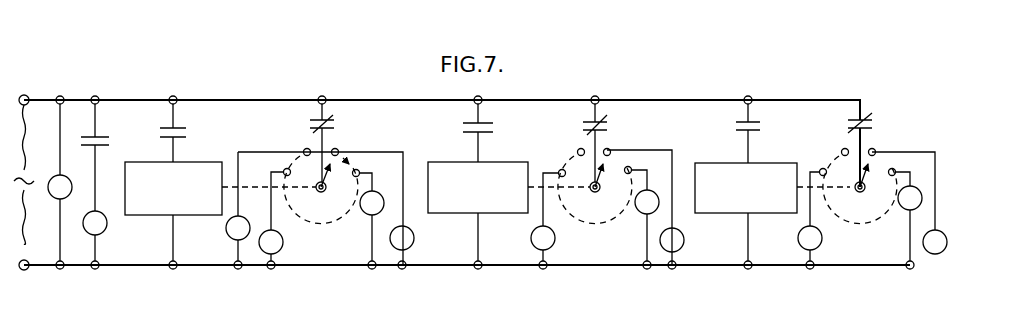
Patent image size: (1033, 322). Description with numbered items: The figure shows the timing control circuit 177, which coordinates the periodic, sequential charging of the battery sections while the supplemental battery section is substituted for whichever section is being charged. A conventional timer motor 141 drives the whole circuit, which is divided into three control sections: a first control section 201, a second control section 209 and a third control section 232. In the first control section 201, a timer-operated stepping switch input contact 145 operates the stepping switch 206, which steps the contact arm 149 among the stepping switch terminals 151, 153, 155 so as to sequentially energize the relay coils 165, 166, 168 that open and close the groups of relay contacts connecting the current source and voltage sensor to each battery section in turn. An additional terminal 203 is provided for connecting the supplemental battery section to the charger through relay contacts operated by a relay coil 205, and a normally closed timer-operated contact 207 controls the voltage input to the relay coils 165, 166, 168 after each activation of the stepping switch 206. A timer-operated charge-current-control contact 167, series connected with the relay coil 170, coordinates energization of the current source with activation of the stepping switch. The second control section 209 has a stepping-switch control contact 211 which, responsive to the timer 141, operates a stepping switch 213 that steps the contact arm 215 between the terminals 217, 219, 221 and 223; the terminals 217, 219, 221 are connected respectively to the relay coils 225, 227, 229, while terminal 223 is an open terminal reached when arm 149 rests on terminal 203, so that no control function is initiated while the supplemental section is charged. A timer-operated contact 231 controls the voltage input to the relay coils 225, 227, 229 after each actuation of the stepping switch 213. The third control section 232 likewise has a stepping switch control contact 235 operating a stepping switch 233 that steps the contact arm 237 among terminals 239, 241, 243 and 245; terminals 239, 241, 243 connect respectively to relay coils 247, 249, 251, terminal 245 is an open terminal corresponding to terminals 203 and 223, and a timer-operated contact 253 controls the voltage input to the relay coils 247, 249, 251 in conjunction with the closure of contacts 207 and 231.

The timing control circuit 177 is at (76, 85).
The timer motor 141 is at (52, 199).
The charge-current-control contact 167 is at (110, 139).
The relay coil 170 is at (106, 230).
The stepping switch input contact 145 is at (187, 135).
The stepping switch 206 is at (208, 161).
The relay coil 205 is at (227, 232).
The first control section 201 is at (327, 90).
The normally closed timer-operated contact 207 is at (335, 125).
The additional terminal 203 is at (304, 149).
The stepping switch terminal 151 is at (338, 149).
The stepping switch terminal 155 is at (284, 171).
The stepping switch terminal 153 is at (360, 171).
The contact arm 149 is at (327, 173).
The relay coil 168 is at (283, 243).
The relay coil 166 is at (362, 212).
The relay coil 165 is at (413, 241).
The stepping-switch control contact 211 is at (466, 127).
The stepping switch 213 is at (453, 162).
The second control section 209 is at (600, 92).
The timer-operated contact 231 is at (608, 127).
The open terminal 223 is at (578, 149).
The terminal 221 is at (562, 169).
The terminal 217 is at (611, 149).
The terminal 219 is at (633, 169).
The contact arm 215 is at (601, 173).
The relay coil 227 is at (642, 212).
The relay coil 229 is at (555, 241).
The relay coil 225 is at (683, 243).
The stepping switch control contact 235 is at (735, 125).
The stepping switch 233 is at (718, 163).
The third control section 232 is at (878, 108).
The timer-operated contact 253 is at (875, 125).
The open terminal 245 is at (842, 148).
The terminal 243 is at (820, 168).
The terminal 239 is at (875, 149).
The terminal 241 is at (897, 169).
The contact arm 237 is at (866, 173).
The relay coil 249 is at (902, 208).
The relay coil 251 is at (822, 242).
The relay coil 247 is at (936, 254).